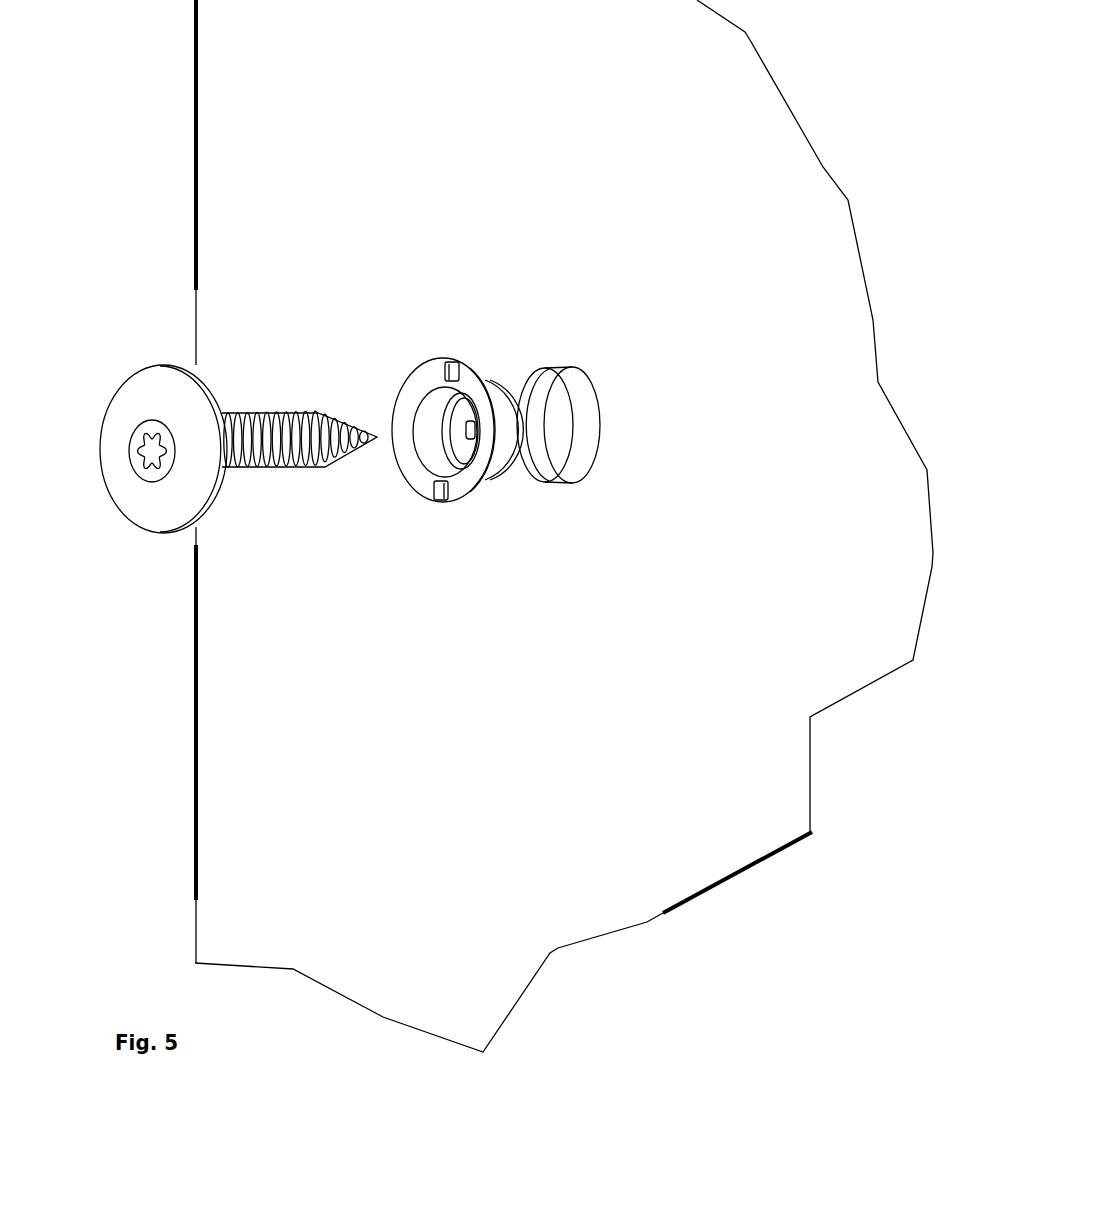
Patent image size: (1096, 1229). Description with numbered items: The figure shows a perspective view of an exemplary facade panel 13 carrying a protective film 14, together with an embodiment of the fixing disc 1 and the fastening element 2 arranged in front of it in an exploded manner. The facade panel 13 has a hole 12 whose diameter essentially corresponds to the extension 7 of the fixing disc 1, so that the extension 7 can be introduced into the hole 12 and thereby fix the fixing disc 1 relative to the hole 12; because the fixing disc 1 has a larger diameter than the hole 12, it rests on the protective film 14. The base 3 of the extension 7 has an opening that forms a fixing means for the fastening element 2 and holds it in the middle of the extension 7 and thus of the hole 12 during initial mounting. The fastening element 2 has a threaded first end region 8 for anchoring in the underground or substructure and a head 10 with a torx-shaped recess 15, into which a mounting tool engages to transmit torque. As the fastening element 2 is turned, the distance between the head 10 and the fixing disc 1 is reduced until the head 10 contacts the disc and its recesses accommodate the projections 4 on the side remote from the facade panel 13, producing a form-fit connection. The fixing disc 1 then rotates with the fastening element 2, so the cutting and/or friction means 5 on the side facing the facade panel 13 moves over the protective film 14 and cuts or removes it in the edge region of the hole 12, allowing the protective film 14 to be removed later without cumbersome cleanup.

The fixing disc 1 is at (448, 437).
The fastening element 2 is at (195, 416).
The base of extension 3 is at (471, 440).
The projections 4 is at (443, 499).
The cutting and/or friction means 5 is at (503, 453).
The extension 7 is at (438, 414).
The first end region 8 is at (272, 465).
The head 10 is at (120, 449).
The hole 12 is at (578, 432).
The facade panel 13 is at (542, 380).
The protective film 14 is at (813, 180).
The torx-shaped recess 15 is at (147, 446).